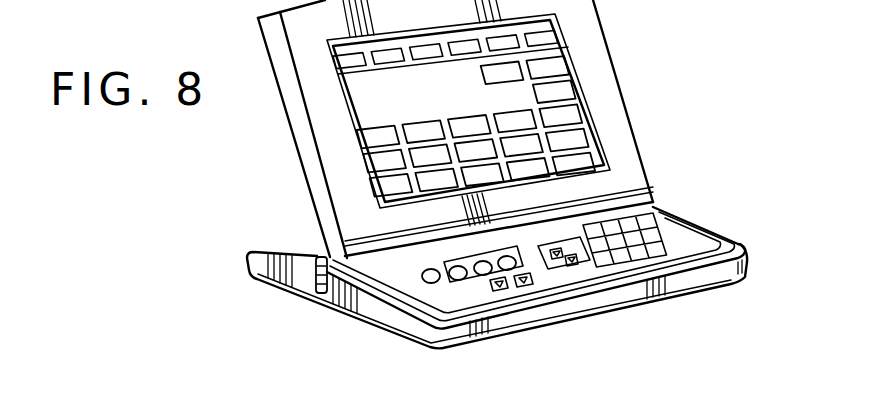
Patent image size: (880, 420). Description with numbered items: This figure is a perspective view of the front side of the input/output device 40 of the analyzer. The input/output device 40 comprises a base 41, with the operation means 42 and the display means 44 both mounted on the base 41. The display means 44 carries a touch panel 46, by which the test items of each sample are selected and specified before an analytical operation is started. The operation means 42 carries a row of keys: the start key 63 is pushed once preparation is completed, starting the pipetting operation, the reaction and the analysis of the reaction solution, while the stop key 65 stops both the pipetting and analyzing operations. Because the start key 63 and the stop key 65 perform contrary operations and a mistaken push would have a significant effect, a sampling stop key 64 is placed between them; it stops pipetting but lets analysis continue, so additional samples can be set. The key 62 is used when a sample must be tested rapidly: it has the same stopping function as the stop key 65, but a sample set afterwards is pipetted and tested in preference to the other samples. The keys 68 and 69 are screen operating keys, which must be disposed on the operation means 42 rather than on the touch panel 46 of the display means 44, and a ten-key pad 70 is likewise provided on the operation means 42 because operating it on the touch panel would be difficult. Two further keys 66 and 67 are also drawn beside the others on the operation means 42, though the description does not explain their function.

The input/output device 40 is at (680, 198).
The base 41 is at (272, 270).
The operation means 42 is at (733, 251).
The display means 44 is at (318, 138).
The touch panel 46 is at (553, 53).
The key 62 is at (426, 271).
The start key 63 is at (454, 267).
The sampling stop key 64 is at (480, 262).
The stop key 65 is at (506, 257).
The left cursor key 66 is at (500, 291).
The right cursor key 67 is at (530, 285).
The screen operating key 68 is at (551, 250).
The screen operating key 69 is at (570, 257).
The ten-key pad 70 is at (624, 240).